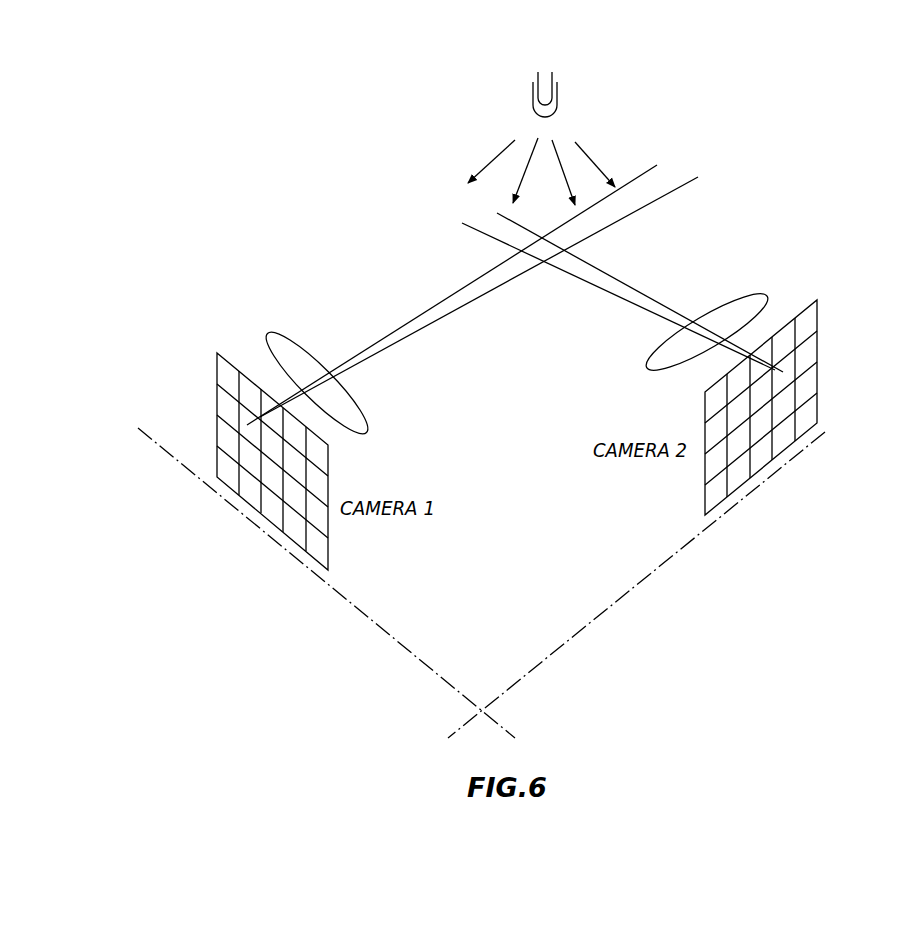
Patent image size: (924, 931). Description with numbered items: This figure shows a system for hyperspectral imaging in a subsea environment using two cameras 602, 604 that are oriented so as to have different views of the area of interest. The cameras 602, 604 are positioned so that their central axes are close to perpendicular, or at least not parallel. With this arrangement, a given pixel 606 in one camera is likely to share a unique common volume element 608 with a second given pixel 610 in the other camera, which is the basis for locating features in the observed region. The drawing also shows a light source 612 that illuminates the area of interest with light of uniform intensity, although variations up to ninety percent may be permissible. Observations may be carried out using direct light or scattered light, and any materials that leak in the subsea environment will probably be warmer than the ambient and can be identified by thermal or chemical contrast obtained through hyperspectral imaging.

The camera 602 is at (307, 553).
The camera 604 is at (737, 490).
The pixel 606 is at (253, 433).
The common volume element 608 is at (546, 247).
The pixel 610 is at (782, 380).
The light source 612 is at (553, 84).